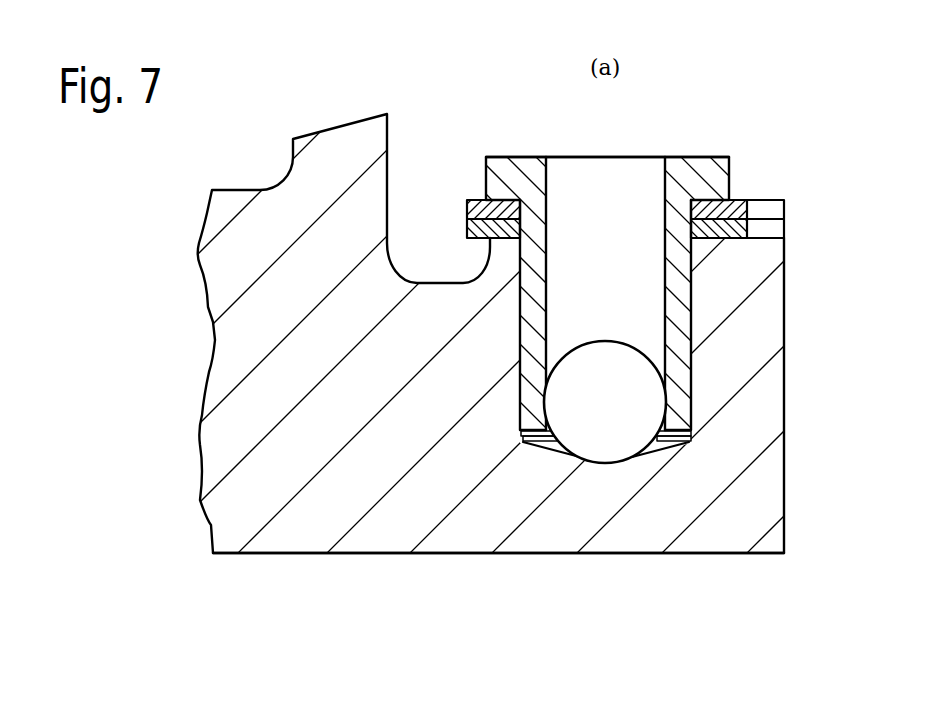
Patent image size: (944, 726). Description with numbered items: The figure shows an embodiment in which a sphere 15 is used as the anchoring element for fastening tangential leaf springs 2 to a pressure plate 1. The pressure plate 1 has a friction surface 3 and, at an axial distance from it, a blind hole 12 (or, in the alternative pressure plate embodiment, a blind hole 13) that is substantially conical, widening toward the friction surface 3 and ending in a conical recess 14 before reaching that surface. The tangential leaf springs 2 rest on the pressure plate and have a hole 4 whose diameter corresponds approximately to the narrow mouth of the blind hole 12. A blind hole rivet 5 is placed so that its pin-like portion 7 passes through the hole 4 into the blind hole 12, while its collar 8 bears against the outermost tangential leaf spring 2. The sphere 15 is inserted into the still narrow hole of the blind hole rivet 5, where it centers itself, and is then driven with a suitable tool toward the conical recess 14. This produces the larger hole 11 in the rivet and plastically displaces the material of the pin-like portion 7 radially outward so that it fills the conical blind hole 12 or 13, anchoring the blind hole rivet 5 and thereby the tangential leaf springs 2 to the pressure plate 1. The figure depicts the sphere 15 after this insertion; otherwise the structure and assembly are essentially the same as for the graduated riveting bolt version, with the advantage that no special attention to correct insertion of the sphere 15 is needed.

The pressure plate 1 is at (759, 517).
The tangential leaf springs 2 is at (750, 192).
The friction surface 3 is at (530, 556).
The hole 4 is at (552, 243).
The blind hole rivet 5 is at (677, 148).
The pin-like portion 7 is at (684, 379).
The collar 8 is at (713, 167).
The larger hole 11 is at (549, 226).
The blind hole 12 is at (545, 450).
The blind hole 13 is at (545, 450).
The conical recess 14 is at (513, 410).
The sphere 15 is at (617, 447).